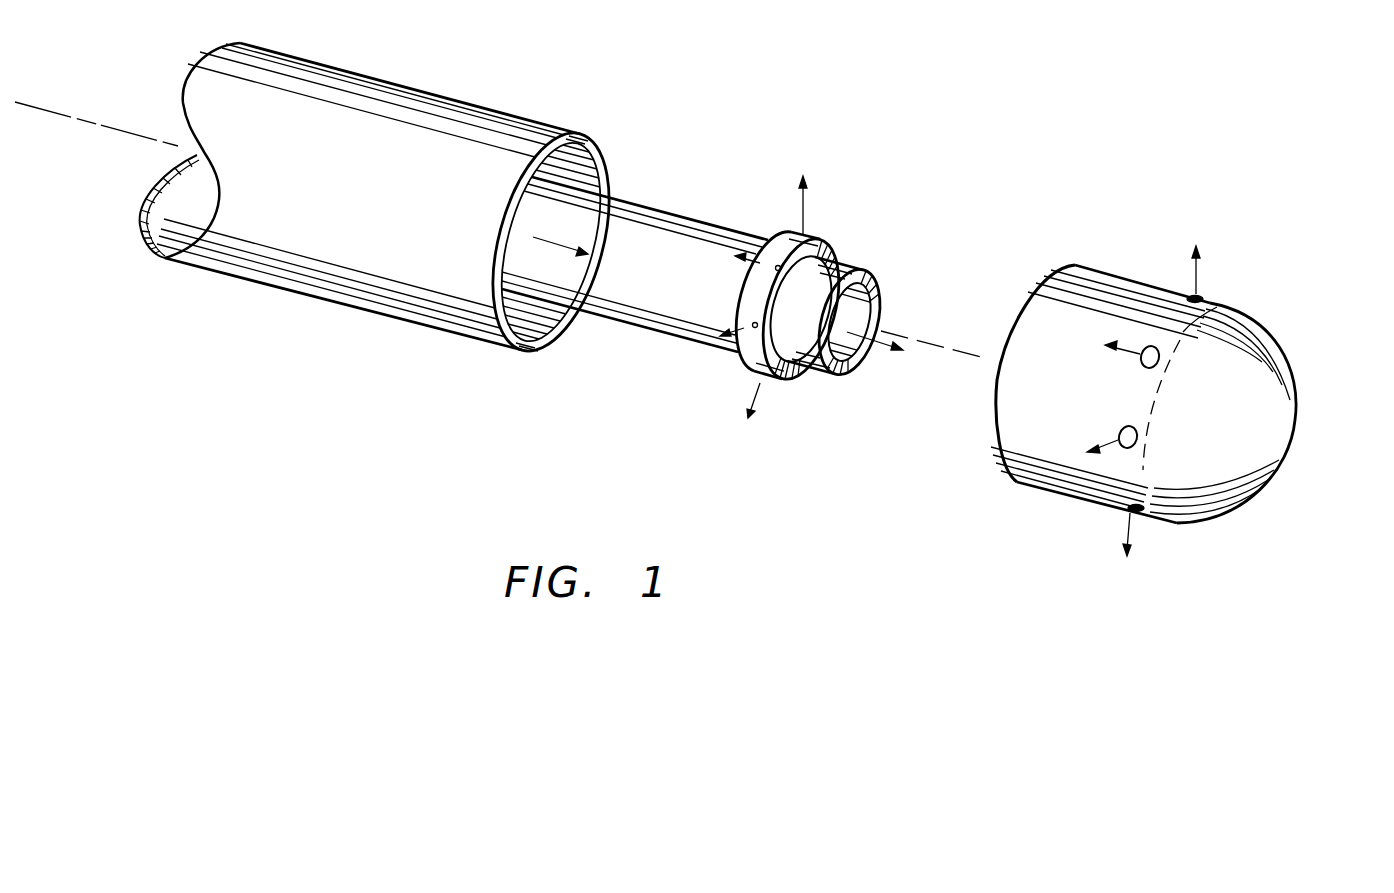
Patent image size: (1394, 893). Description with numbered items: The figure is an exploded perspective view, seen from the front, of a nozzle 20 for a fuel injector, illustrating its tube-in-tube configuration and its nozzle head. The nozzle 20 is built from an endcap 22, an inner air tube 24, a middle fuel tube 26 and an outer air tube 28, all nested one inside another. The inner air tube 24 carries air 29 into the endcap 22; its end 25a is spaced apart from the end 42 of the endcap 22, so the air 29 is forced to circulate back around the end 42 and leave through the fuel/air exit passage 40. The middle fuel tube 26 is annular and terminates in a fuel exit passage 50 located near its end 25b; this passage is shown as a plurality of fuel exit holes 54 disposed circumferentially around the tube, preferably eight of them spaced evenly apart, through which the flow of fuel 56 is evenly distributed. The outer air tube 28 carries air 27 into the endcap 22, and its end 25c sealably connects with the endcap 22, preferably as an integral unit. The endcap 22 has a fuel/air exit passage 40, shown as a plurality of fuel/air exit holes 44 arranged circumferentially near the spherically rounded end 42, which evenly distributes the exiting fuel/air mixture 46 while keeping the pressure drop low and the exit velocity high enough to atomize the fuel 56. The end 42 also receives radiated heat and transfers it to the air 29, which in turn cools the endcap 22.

The nozzle 20 is at (777, 443).
The endcap 22 is at (1100, 272).
The inner air tube 24 is at (856, 320).
The end of the inner air tube 25a is at (872, 270).
The end of the middle fuel tube 25b is at (830, 375).
The end of the outer air tube 25c is at (584, 148).
The middle fuel tube 26 is at (700, 220).
The air 27 is at (558, 250).
The outer air tube 28 is at (502, 110).
The air 29 is at (877, 350).
The fuel/air exit passage 40 is at (1202, 297).
The end of the endcap 42 is at (1240, 416).
The fuel/air exit holes 44 is at (1133, 510).
The exiting fuel/air mixture 46 is at (1140, 530).
The fuel exit passage 50 is at (810, 238).
The fuel exit holes 54 is at (758, 381).
The flow of fuel 56 is at (806, 205).